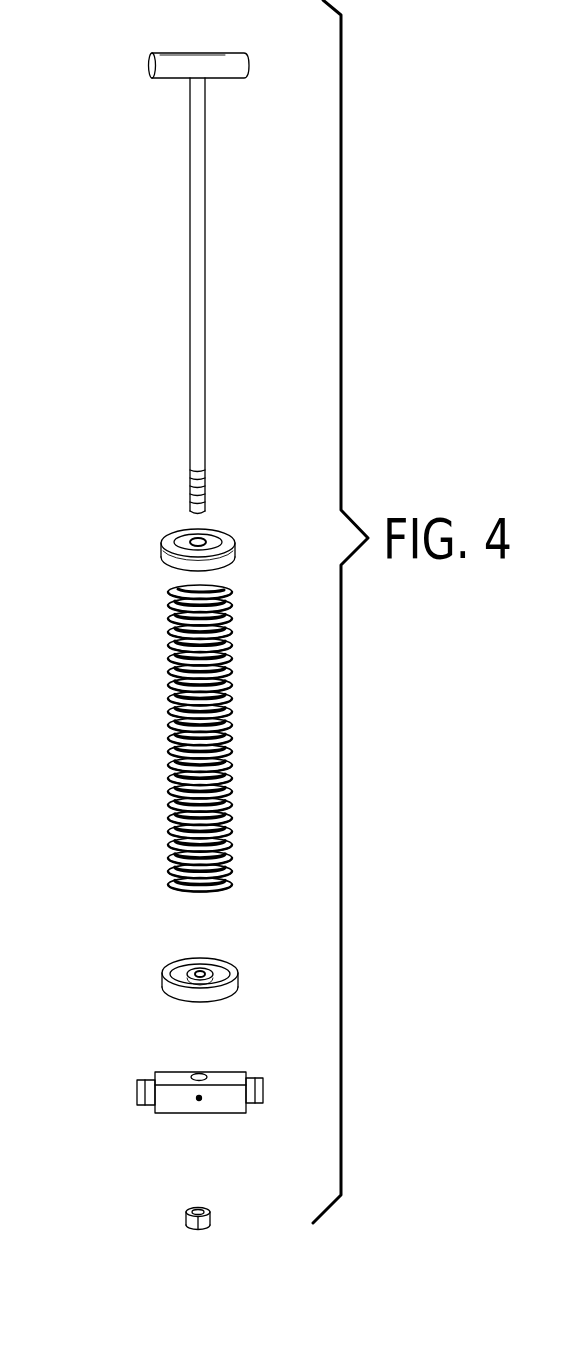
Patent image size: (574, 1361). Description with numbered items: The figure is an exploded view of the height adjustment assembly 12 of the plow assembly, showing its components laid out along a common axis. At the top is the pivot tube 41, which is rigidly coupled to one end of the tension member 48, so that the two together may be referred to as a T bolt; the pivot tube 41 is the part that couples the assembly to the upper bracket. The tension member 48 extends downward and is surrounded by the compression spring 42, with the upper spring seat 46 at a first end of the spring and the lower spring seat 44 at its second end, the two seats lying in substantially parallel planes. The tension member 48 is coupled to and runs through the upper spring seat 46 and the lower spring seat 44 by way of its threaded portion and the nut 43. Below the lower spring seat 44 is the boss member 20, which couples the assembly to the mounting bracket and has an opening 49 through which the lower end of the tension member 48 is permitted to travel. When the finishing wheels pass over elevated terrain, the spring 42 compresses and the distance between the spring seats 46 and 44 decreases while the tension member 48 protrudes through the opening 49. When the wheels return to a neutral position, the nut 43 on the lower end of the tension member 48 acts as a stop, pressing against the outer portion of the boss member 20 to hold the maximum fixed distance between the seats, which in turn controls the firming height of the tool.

The height adjustment assembly 12 is at (106, 588).
The pivot tube 41 is at (251, 63).
The tension member 48 is at (206, 300).
The upper spring seat 46 is at (215, 540).
The compression spring 42 is at (172, 740).
The lower spring seat 44 is at (163, 983).
The boss member 20 is at (140, 1092).
The opening 49 is at (201, 1070).
The nut 43 is at (185, 1218).